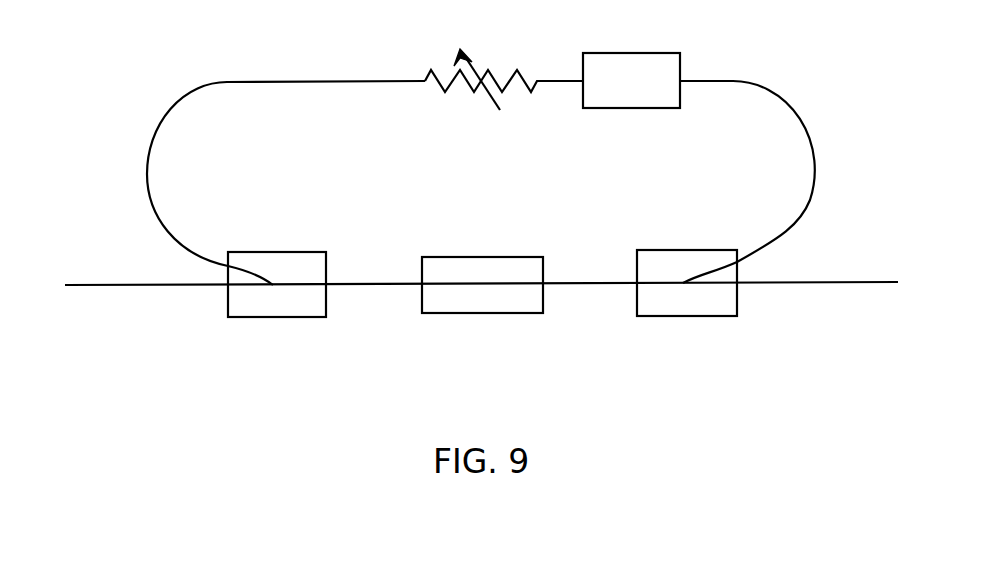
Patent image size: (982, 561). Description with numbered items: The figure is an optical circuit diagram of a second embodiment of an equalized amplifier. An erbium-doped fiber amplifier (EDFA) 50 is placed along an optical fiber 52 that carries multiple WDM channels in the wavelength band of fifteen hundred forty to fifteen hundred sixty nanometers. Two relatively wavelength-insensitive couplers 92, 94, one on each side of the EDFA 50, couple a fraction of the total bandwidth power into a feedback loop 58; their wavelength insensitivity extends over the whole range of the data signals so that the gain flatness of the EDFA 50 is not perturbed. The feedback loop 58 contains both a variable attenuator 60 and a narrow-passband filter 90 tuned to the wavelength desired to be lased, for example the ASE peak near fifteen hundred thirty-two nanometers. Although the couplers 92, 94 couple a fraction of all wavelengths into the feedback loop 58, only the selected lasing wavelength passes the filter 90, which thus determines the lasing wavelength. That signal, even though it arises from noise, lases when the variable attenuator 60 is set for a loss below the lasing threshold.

The erbium-doped fiber amplifier 50 is at (482, 313).
The optical fiber 52 is at (130, 285).
The feedback loop 58 is at (248, 82).
The variable attenuator 60 is at (535, 85).
The narrow-passband filter 90 is at (673, 90).
The wavelength-insensitive coupler 92 is at (278, 312).
The wavelength-insensitive coupler 94 is at (690, 316).